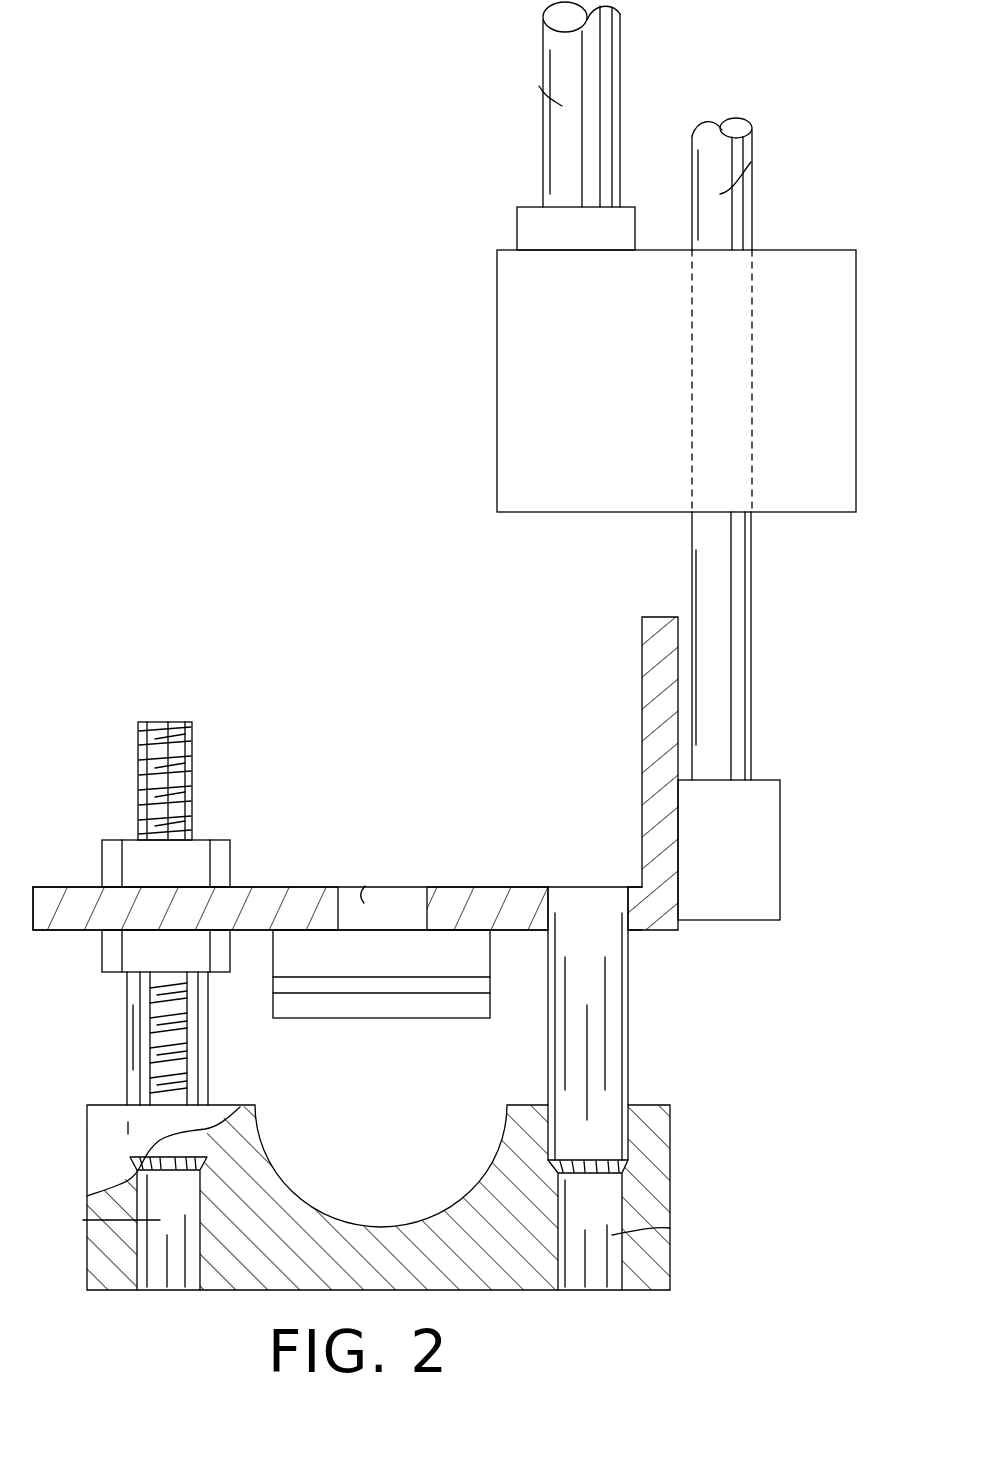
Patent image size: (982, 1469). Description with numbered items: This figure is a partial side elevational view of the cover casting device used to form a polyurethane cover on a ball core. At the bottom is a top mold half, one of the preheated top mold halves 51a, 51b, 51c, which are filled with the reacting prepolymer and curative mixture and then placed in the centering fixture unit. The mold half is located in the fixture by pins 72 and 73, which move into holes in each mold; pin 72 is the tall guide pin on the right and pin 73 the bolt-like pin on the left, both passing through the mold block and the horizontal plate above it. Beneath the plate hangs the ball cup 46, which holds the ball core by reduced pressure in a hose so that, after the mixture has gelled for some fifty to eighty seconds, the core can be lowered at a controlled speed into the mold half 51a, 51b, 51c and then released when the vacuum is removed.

The ball cup 46 is at (363, 1003).
The pin 72 is at (575, 1073).
The pin 73 is at (132, 1143).
The top mold half 51a is at (653, 1172).
The top mold half 51b is at (112, 1230).
The top mold half 51c is at (646, 1197).